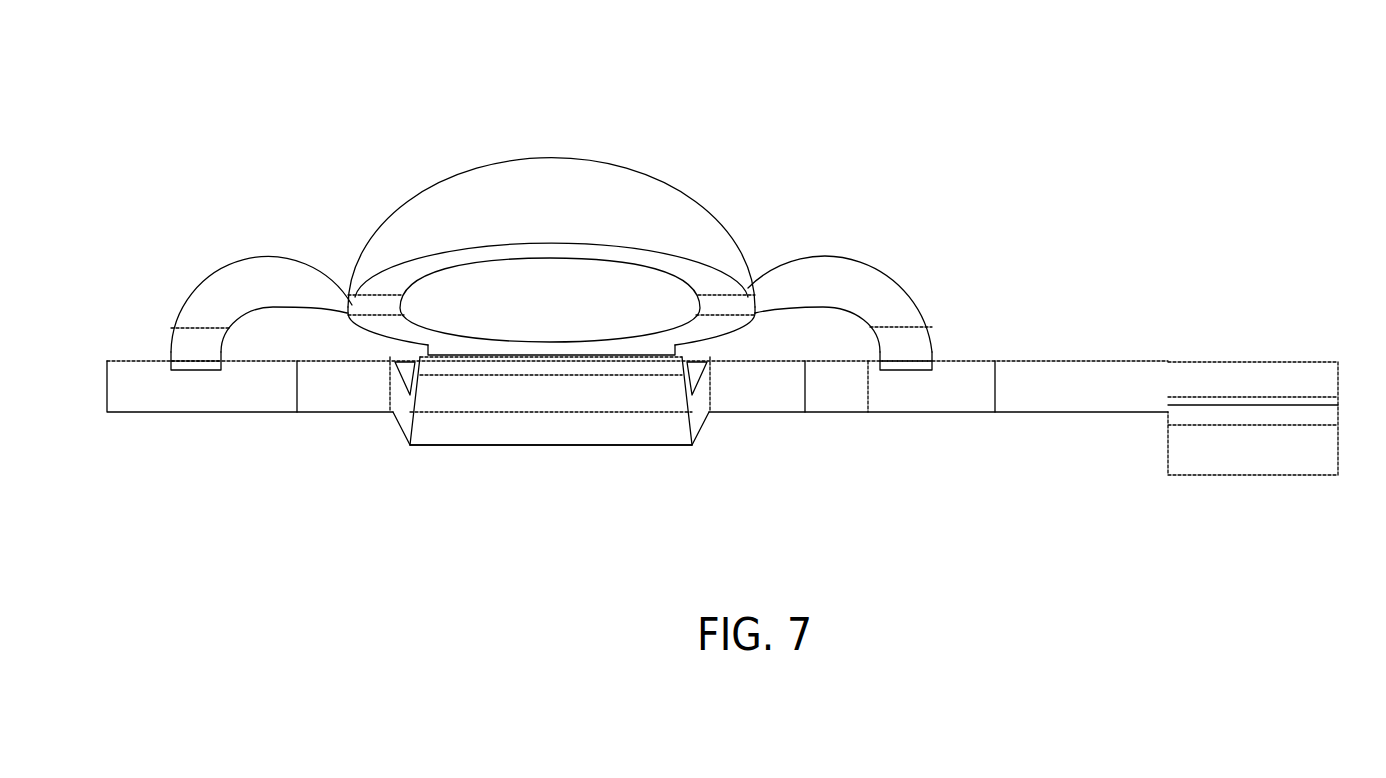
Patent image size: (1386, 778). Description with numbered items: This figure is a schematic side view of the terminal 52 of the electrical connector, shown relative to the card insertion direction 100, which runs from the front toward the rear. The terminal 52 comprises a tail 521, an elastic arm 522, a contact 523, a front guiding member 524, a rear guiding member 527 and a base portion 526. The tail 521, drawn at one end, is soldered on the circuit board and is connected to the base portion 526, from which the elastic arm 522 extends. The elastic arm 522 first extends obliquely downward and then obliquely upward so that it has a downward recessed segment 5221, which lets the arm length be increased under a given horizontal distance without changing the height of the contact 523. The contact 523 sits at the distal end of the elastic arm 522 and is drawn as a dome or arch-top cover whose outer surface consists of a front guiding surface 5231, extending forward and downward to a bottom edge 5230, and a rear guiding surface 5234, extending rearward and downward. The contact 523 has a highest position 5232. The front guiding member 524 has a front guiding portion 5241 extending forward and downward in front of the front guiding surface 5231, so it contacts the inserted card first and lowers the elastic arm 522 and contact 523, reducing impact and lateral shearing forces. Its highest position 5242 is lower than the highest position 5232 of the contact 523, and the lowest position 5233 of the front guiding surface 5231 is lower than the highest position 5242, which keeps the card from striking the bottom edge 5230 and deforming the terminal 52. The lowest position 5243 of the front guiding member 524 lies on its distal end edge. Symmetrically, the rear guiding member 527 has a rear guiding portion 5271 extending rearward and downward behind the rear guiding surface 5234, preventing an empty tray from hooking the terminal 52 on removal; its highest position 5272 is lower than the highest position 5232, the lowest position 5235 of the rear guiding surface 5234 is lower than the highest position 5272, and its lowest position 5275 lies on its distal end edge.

The card insertion direction 100 is at (1003, 66).
The terminal 52 is at (208, 140).
The tail 521 is at (1252, 466).
The elastic arm 522 is at (551, 437).
The downward recessed segment 5221 is at (600, 446).
The contact 523 is at (552, 286).
The bottom edge 5230 is at (739, 323).
The front guiding surface 5231 is at (732, 252).
The highest position 5232 is at (545, 157).
The lowest position 5233 is at (790, 317).
The rear guiding surface 5234 is at (373, 243).
The lowest position 5235 is at (320, 314).
The front guiding member 524 is at (885, 333).
The front guiding portion 5241 is at (928, 322).
The highest position 5242 is at (828, 254).
The lowest position 5243 is at (905, 372).
The base portion 526 is at (335, 413).
The rear guiding member 527 is at (216, 333).
The rear guiding portion 5271 is at (177, 323).
The highest position 5272 is at (270, 253).
The lowest position 5275 is at (195, 372).